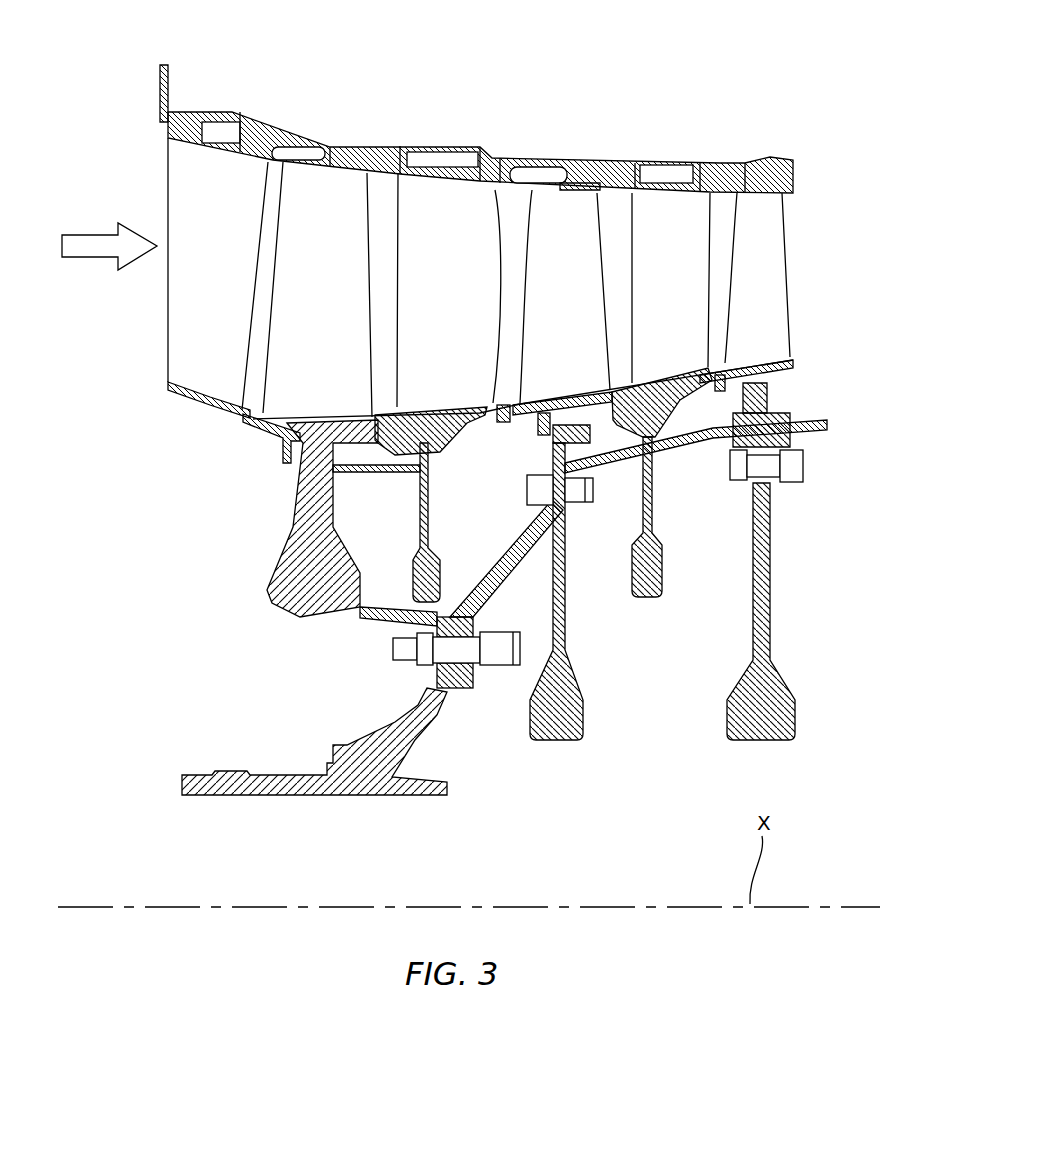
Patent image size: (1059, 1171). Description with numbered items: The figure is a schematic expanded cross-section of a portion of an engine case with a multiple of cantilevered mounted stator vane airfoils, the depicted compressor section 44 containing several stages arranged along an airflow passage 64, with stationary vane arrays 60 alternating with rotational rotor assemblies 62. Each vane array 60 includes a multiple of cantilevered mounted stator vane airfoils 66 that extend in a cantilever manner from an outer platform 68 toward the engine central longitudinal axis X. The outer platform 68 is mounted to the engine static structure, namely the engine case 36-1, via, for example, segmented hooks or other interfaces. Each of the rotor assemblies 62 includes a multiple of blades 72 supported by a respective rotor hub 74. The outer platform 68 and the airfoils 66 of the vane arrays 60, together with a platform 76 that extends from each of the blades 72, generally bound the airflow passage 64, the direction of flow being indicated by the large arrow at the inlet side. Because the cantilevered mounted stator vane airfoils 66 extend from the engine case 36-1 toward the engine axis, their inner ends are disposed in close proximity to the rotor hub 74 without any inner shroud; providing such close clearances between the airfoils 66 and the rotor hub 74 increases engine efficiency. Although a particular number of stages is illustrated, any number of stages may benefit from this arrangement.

The compressor section 44 is at (755, 62).
The airflow passage 64 is at (88, 235).
The outer platform 68 is at (496, 183).
The engine case 36-1 is at (572, 185).
The rotor assembly 62 is at (322, 193).
The vane array 60 is at (445, 203).
The blade 72 is at (340, 288).
The cantilevered mounted stator vane airfoil 66 is at (457, 285).
The platform 76 is at (262, 444).
The rotor hub 74 is at (272, 558).